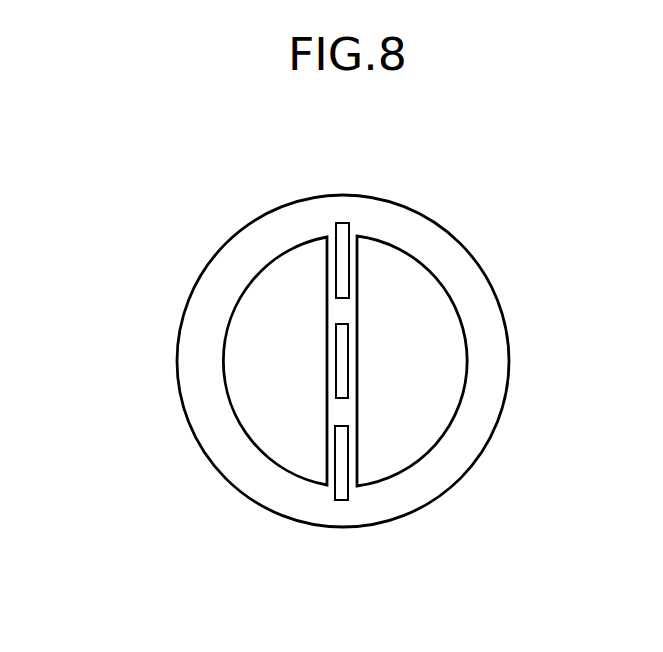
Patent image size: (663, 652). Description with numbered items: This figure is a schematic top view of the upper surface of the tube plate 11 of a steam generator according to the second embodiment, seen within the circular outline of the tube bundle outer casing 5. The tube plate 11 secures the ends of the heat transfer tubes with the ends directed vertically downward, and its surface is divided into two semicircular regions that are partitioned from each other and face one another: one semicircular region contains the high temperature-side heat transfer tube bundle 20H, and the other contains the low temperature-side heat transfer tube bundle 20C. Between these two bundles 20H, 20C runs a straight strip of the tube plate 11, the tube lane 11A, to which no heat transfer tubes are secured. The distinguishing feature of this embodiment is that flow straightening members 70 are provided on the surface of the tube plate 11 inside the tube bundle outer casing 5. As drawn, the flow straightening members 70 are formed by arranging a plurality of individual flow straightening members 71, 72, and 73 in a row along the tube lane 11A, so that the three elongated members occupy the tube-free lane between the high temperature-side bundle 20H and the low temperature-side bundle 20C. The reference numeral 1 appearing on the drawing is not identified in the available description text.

The device 1 is at (482, 447).
The tube bundle outer casing 5 is at (467, 383).
The tube plate 11 is at (438, 475).
The tube lane 11A is at (343, 413).
The high temperature-side heat transfer tube bundle 20H is at (307, 252).
The low temperature-side heat transfer tube bundle 20C is at (447, 333).
The flow straightening members 70 is at (92, 233).
The flow straightening member 71 is at (336, 265).
The flow straightening member 72 is at (336, 356).
The flow straightening member 73 is at (335, 467).